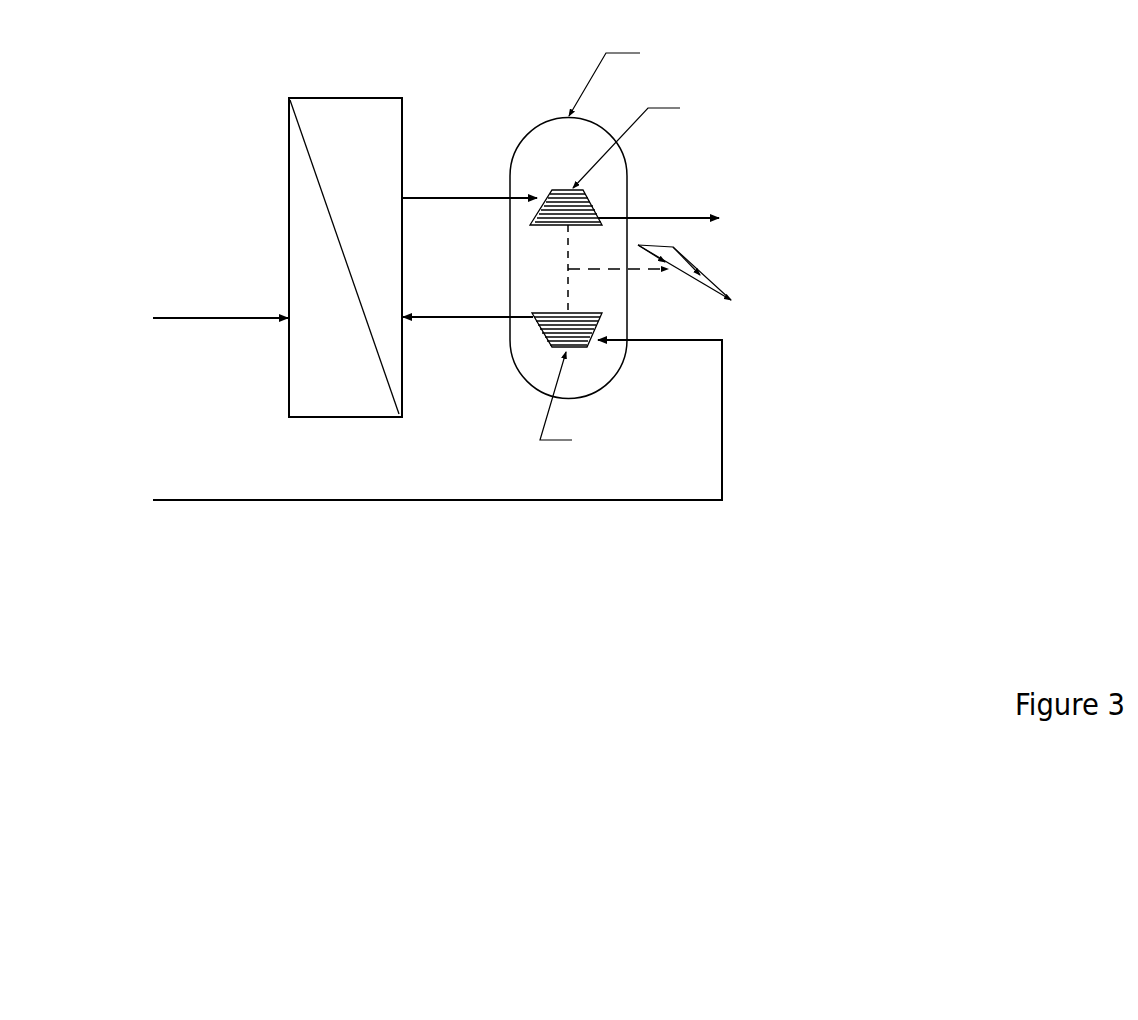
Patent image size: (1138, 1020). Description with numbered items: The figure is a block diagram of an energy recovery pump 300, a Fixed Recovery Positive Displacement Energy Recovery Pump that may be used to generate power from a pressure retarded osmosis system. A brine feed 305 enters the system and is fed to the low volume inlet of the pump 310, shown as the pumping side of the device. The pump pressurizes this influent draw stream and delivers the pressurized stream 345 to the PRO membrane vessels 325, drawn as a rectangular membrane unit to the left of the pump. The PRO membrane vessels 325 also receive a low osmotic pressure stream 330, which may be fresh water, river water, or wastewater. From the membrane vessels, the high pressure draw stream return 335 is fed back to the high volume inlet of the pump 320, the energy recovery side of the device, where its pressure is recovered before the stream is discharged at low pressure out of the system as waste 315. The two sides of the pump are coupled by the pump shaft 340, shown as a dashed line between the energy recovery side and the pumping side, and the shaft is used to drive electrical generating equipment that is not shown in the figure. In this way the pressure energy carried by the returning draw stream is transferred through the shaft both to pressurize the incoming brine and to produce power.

The energy recovery pump 300 is at (636, 45).
The brine feed 305 is at (437, 445).
The pump low volume inlet side 310 is at (610, 397).
The waste 315 is at (751, 220).
The pump high volume inlet side 320 is at (696, 161).
The PRO membrane vessels 325 is at (345, 265).
The low osmotic pressure stream 330 is at (220, 327).
The high pressure draw stream return 335 is at (469, 180).
The pump shaft 340 is at (625, 269).
The pressurized stream 345 is at (468, 300).